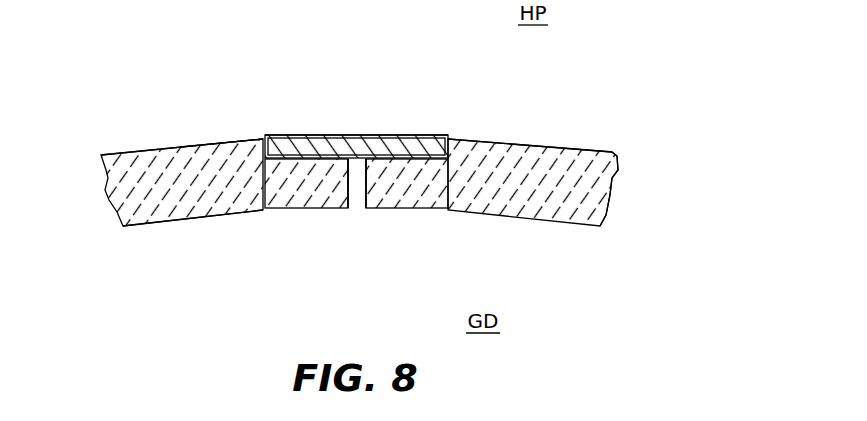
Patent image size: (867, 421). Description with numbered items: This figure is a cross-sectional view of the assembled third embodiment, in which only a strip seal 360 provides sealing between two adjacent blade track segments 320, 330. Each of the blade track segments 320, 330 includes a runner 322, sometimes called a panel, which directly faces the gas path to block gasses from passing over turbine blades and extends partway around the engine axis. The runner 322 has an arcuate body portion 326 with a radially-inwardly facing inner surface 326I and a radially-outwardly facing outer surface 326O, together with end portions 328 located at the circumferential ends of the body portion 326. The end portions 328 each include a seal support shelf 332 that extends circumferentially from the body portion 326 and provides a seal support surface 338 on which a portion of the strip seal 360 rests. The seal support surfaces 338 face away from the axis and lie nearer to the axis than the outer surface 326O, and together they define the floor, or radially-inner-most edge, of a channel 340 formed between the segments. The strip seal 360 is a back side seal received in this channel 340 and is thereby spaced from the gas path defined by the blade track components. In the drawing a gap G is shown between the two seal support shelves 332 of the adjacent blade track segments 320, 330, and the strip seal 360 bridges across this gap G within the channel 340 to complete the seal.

The blade track segment 320 is at (381, 171).
The runner 322 is at (163, 139).
The body portion 326 is at (157, 213).
The outer surface 326O is at (252, 140).
The inner surface 326I is at (205, 213).
The end portion 328 is at (277, 221).
The blade track segment 330 is at (607, 148).
The seal support shelf 332 is at (302, 202).
The seal support surface 338 is at (312, 157).
The channel 340 is at (413, 130).
The strip seal 360 is at (377, 130).
The gap G is at (355, 202).